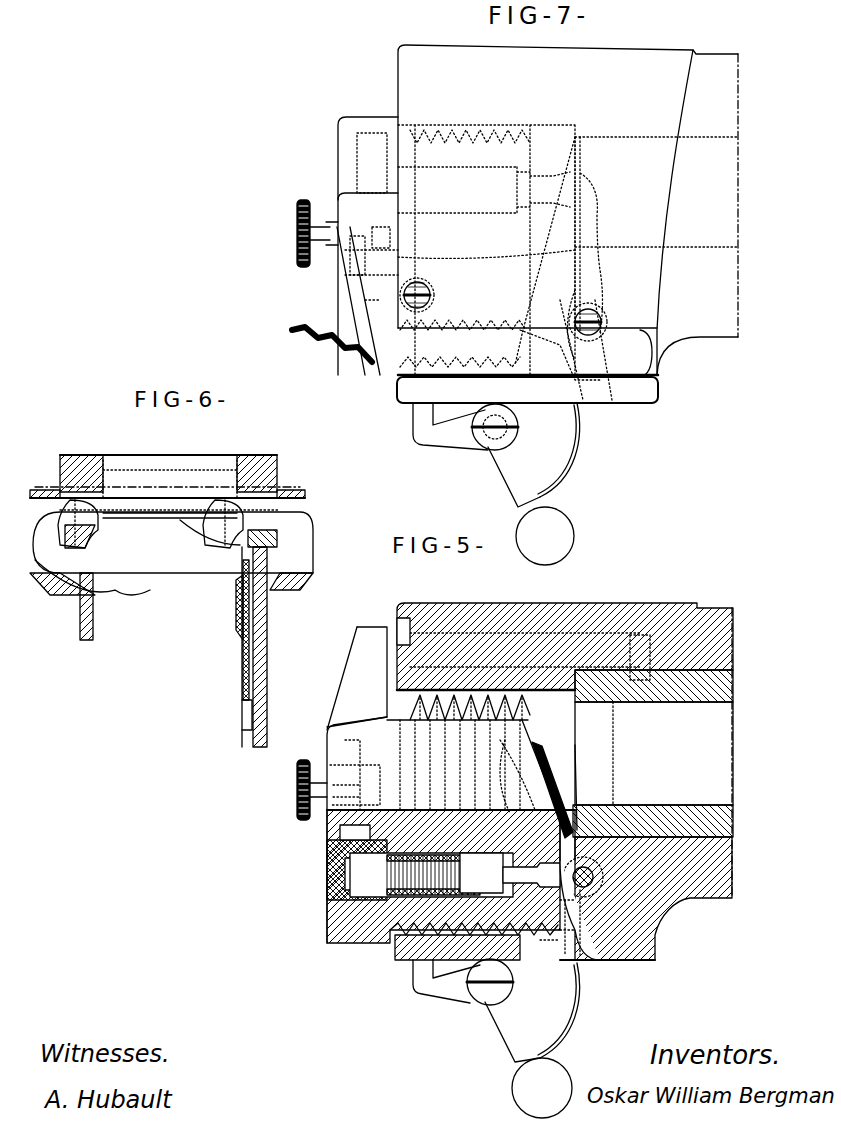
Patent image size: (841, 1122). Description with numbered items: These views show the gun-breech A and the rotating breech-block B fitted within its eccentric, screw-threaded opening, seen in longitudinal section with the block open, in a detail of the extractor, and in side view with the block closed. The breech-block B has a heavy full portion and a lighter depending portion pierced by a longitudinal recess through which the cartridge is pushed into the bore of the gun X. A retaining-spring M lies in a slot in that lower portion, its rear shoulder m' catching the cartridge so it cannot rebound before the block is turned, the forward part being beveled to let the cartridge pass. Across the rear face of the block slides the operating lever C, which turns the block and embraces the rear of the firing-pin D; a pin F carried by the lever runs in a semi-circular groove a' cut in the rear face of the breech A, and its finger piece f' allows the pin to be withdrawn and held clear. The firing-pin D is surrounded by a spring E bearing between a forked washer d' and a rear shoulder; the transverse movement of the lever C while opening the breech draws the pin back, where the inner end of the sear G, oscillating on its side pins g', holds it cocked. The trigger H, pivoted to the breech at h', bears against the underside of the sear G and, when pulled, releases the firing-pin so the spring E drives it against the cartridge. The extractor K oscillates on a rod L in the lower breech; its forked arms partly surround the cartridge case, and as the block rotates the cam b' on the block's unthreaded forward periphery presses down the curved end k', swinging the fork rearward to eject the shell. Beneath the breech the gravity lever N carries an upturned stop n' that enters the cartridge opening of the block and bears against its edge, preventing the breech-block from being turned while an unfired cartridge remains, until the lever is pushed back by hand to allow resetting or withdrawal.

In FIG. 7, the gun-breech A is at (567, 224).
In FIG. 6, the gun-breech A is at (167, 479).
In FIG. 5, the gun-breech A is at (565, 636).
In FIG. 7, the breech-block B is at (368, 236).
In FIG. 6, the breech-block B is at (171, 629).
In FIG. 5, the breech-block B is at (458, 752).
In FIG. 5, the operating lever C is at (385, 660).
In FIG. 5, the firing-pin D is at (455, 875).
In FIG. 5, the spring E is at (380, 945).
In FIG. 5, the pin F is at (358, 763).
In FIG. 7, the sear G is at (345, 280).
In FIG. 5, the sear G is at (328, 915).
In FIG. 7, the trigger H is at (332, 353).
In FIG. 5, the trigger H is at (570, 748).
In FIG. 7, the extractor K is at (596, 248).
In FIG. 6, the extractor K is at (153, 523).
In FIG. 7, the rod L is at (600, 312).
In FIG. 5, the rod L is at (607, 905).
In FIG. 7, the automatic gravity lever N is at (507, 427).
In FIG. 5, the automatic gravity lever N is at (505, 982).
In FIG. 5, the gun X is at (653, 753).
In FIG. 5, the semi-circular groove a' is at (388, 618).
In FIG. 5, the shoulder or cam b' is at (549, 928).
In FIG. 5, the forked washer d' is at (506, 776).
In FIG. 7, the finger piece f' is at (300, 233).
In FIG. 5, the finger piece f' is at (305, 807).
In FIG. 7, the pins or projections g' is at (409, 236).
In FIG. 7, the trigger pivot h' is at (434, 296).
In FIG. 7, the extractor end k' is at (580, 368).
In FIG. 5, the lever pivot pin K' is at (581, 908).
In FIG. 6, the shoulder m' is at (220, 607).
In FIG. 6, the retaining-spring M is at (240, 660).
In FIG. 7, the hook or stop n' is at (429, 428).
In FIG. 5, the hook or stop n' is at (436, 987).